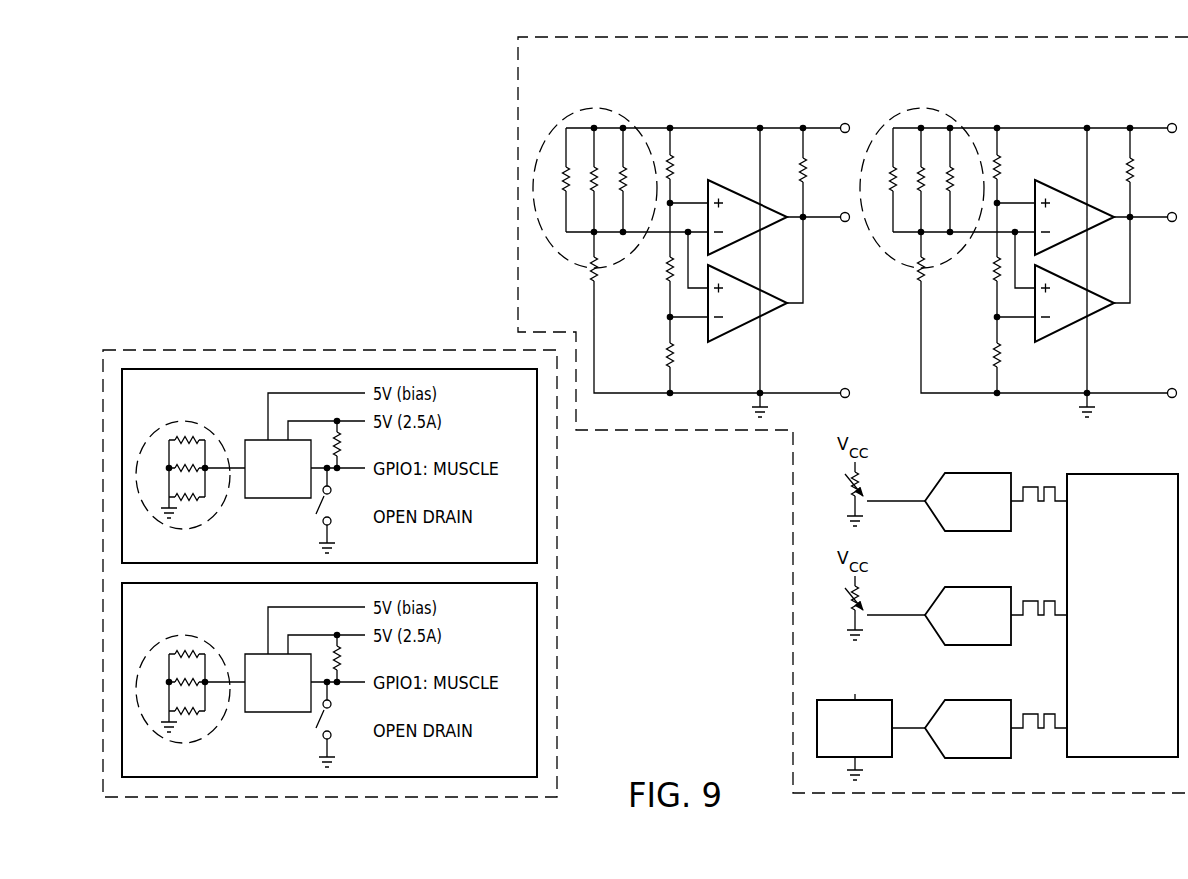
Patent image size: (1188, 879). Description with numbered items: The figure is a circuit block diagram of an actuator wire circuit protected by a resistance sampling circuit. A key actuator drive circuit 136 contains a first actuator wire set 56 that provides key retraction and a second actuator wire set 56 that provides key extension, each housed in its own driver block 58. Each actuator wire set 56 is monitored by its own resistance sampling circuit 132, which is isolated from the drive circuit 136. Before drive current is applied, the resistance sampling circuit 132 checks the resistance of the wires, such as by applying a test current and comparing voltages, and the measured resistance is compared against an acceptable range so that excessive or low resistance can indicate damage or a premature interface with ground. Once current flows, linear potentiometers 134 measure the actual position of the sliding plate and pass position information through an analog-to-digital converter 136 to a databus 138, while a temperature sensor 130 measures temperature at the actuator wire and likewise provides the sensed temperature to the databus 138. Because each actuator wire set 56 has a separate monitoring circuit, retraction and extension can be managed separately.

The actuator wire set 56 is at (628, 126).
The muscle wire driver circuit 58 is at (546, 527).
The temperature sensor 130 is at (893, 710).
The resistance sampling circuit 132 is at (736, 101).
The linear potentiometer 134 is at (896, 466).
The key actuator drive circuit 136 is at (240, 345).
The databus 138 is at (715, 438).